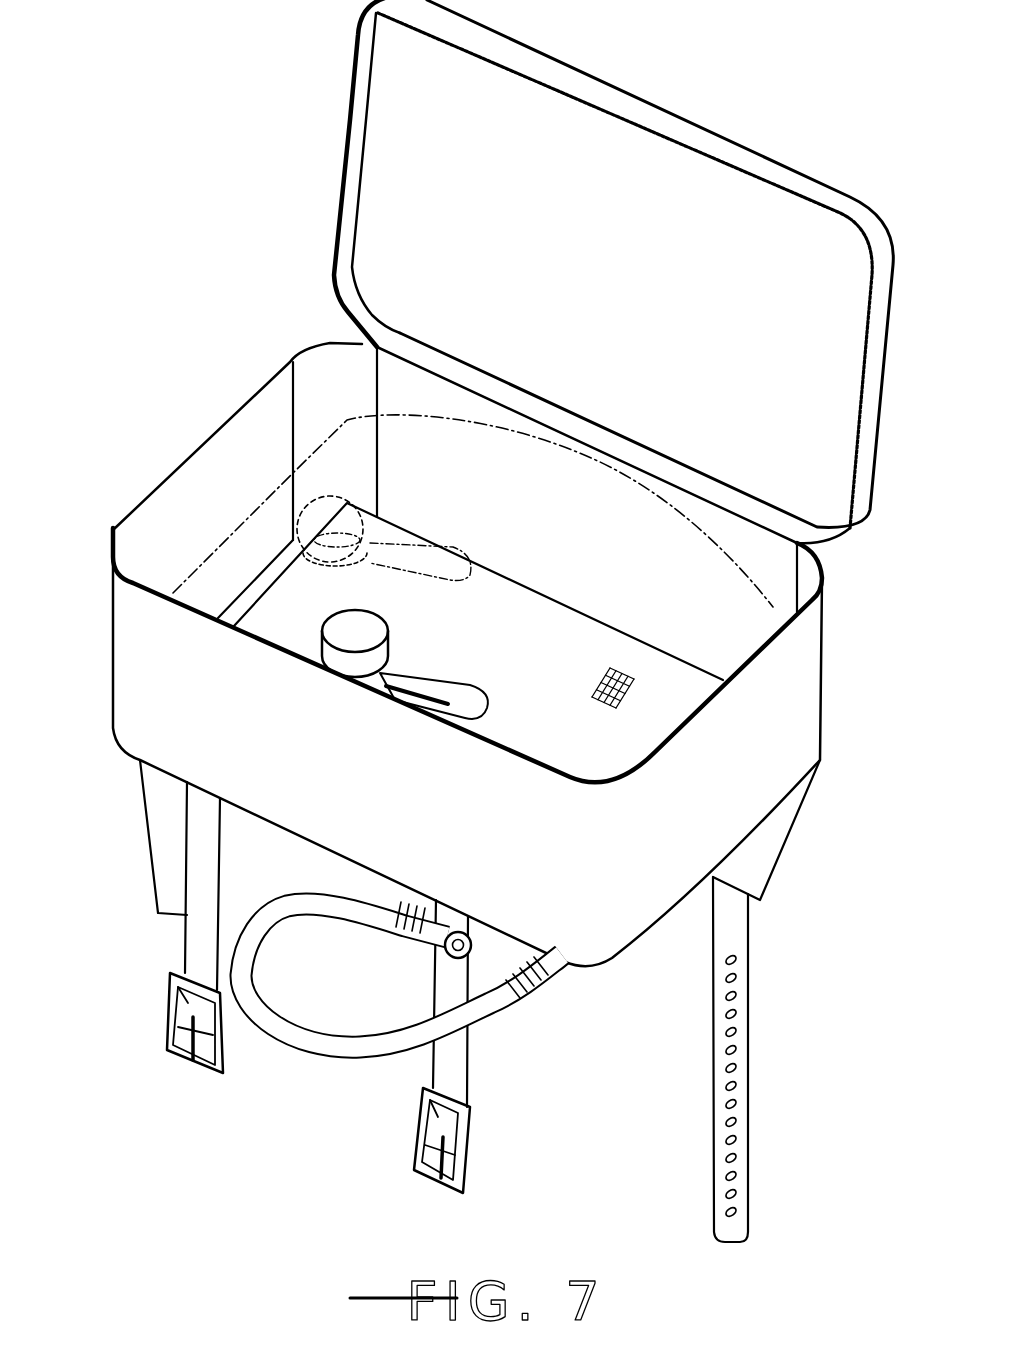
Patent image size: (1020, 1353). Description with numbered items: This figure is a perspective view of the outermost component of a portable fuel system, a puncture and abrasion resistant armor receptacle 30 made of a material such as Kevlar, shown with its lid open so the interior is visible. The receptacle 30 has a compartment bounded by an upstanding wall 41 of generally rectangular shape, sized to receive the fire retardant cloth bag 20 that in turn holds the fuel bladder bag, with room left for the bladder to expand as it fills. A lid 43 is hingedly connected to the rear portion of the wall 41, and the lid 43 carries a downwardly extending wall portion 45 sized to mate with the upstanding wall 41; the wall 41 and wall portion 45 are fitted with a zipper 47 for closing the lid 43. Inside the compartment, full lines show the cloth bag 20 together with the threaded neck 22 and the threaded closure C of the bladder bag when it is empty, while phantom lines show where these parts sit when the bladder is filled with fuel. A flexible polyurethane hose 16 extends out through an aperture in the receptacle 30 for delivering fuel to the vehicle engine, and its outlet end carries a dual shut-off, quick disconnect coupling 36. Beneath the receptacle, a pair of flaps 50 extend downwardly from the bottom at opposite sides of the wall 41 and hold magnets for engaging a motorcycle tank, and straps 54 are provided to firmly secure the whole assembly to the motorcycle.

The hose 16 is at (343, 1047).
The fire retardant cloth bag 20 is at (501, 675).
The threaded neck 22 is at (347, 668).
The armor receptacle 30 is at (195, 455).
The dual shut-off, quick disconnect coupling 36 is at (462, 932).
The wall 41 is at (331, 775).
The lid 43 is at (550, 270).
The downwardly extending wall portion 45 is at (357, 157).
The zipper 47 is at (325, 242).
The flaps 50 is at (160, 828).
The straps 54 is at (195, 953).
The threaded closure C is at (352, 634).